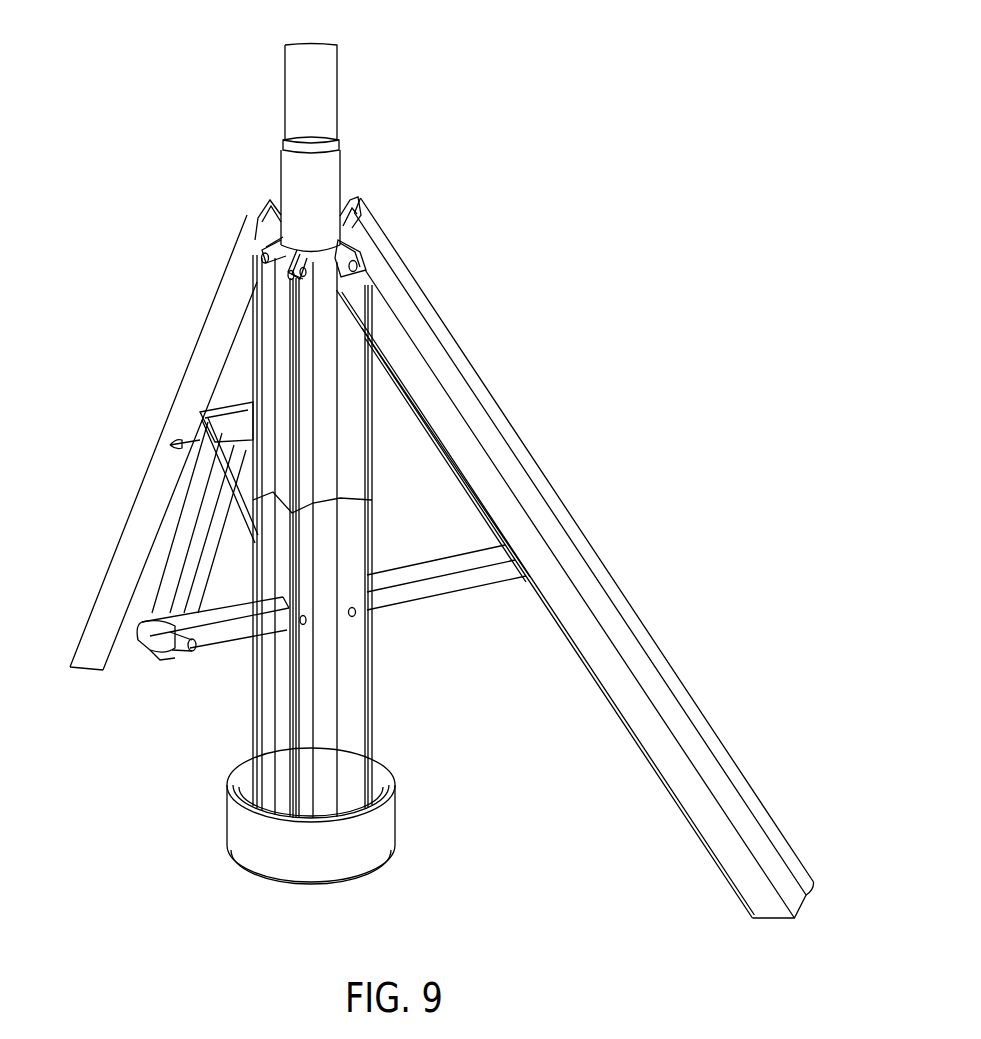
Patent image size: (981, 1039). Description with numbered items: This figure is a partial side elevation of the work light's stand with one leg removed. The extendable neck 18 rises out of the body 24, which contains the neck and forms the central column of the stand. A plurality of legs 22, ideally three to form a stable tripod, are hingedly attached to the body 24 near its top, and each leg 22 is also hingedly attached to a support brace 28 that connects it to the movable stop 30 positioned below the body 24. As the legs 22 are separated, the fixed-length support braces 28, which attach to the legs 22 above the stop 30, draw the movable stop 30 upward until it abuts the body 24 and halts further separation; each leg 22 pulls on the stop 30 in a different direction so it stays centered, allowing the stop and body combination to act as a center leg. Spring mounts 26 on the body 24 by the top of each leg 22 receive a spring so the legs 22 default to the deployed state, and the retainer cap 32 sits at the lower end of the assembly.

The extendable neck 18 is at (318, 110).
The legs 22 is at (215, 333).
The body 24 is at (302, 468).
The spring mounts 26 is at (262, 248).
The support braces 28 is at (450, 600).
The movable stop 30 is at (270, 737).
The retainer cap 32 is at (355, 838).